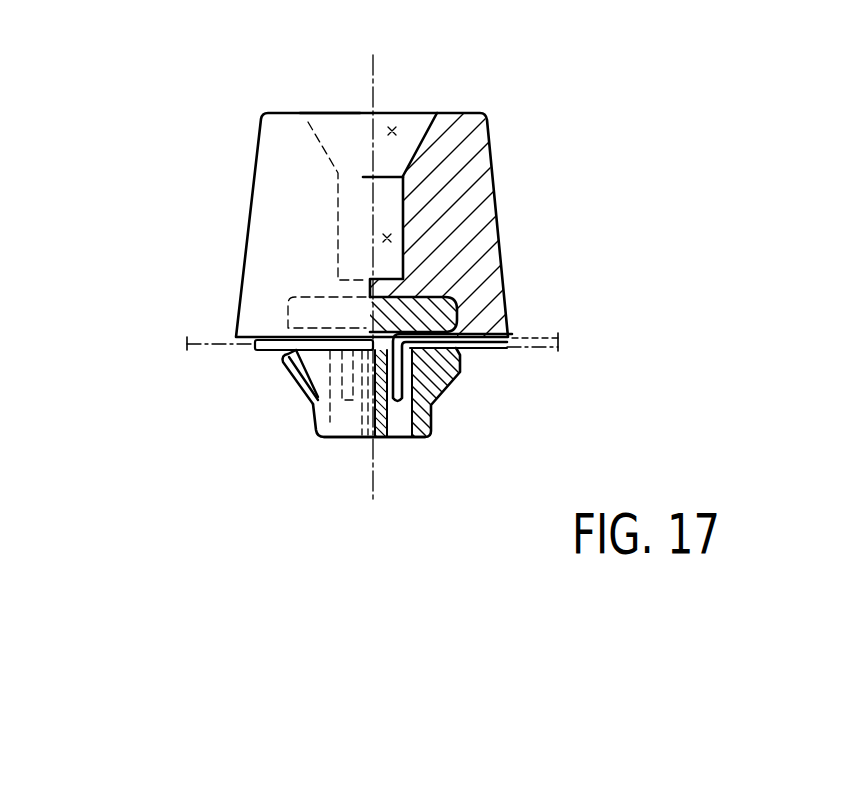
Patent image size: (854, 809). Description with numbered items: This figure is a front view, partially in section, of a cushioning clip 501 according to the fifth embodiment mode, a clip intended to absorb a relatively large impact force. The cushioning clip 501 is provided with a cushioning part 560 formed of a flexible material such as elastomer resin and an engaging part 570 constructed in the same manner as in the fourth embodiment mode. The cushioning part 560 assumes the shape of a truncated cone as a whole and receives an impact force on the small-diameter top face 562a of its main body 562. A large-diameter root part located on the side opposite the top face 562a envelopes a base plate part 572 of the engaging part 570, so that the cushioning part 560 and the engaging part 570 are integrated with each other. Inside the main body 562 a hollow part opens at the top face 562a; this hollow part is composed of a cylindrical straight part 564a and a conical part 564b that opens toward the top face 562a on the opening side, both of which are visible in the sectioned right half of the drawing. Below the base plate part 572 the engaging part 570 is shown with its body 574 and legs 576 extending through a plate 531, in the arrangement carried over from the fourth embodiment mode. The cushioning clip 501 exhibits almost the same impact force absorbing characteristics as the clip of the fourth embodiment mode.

The cushioning clip 501 is at (550, 175).
The cushioning part 560 is at (495, 133).
The main body 562 is at (268, 203).
The top face 562a is at (337, 110).
The straight part 564a is at (387, 238).
The conical part 564b is at (392, 131).
The base plate part 572 is at (437, 322).
The plate 531 is at (198, 337).
The engaging part 570 is at (278, 420).
The clip body 574 is at (343, 425).
The engaging legs 576 is at (287, 375).